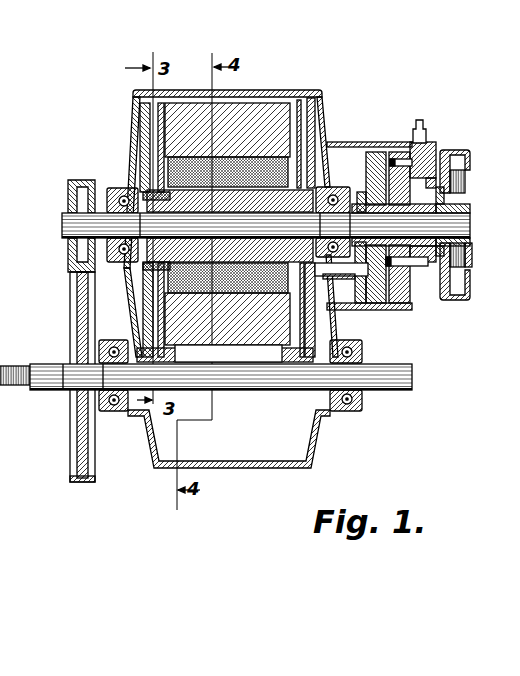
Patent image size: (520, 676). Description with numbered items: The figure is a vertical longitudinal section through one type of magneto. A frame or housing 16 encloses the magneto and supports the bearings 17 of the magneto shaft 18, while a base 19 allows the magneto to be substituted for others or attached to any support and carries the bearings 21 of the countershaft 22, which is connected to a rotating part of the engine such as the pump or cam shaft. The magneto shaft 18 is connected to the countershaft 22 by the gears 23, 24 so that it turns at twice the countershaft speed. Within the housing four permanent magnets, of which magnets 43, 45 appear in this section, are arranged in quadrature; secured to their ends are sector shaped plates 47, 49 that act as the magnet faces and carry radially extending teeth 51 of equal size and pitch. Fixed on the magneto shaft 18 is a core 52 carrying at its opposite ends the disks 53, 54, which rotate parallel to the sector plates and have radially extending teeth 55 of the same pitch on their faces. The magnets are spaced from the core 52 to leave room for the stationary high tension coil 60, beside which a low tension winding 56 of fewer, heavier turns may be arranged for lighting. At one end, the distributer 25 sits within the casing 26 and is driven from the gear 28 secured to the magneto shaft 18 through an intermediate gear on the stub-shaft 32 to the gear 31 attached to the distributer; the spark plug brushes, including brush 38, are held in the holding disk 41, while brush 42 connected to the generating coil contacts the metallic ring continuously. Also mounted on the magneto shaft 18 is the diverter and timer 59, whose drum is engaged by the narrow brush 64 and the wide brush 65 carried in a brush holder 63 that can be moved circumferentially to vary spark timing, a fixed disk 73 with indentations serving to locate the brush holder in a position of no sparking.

The frame or housing 16 is at (131, 135).
The bearings 17 is at (119, 193).
The magneto shaft 18 is at (68, 226).
The base 19 is at (290, 466).
The bearings 21 is at (122, 412).
The countershaft 22 is at (253, 383).
The gear 23 is at (80, 431).
The gear 24 is at (77, 258).
The distributer 25 is at (374, 150).
The casing 26 is at (388, 308).
The gear 28 is at (356, 205).
The gear 31 is at (370, 175).
The stub-shaft 32 is at (346, 278).
The brush 38 is at (410, 265).
The holding disk 41 is at (413, 304).
The brush 42 is at (392, 160).
The permanent magnet 43 is at (220, 115).
The permanent magnet 45 is at (238, 336).
The sector shaped plate 47 is at (165, 107).
The sector shaped plate 49 is at (170, 353).
The radially extending teeth 51 is at (322, 97).
The core 52 is at (148, 270).
The plate or disk 53 is at (145, 110).
The plate or disk 54 is at (310, 117).
The radially extending teeth 55 is at (327, 108).
The low tension winding 56 is at (227, 160).
The diverter and timer 59 is at (470, 212).
The high tension coil 60 is at (240, 178).
The brush holder 63 is at (470, 160).
The brush 64 is at (463, 183).
The brush 65 is at (462, 266).
The fixed disk 73 is at (436, 197).